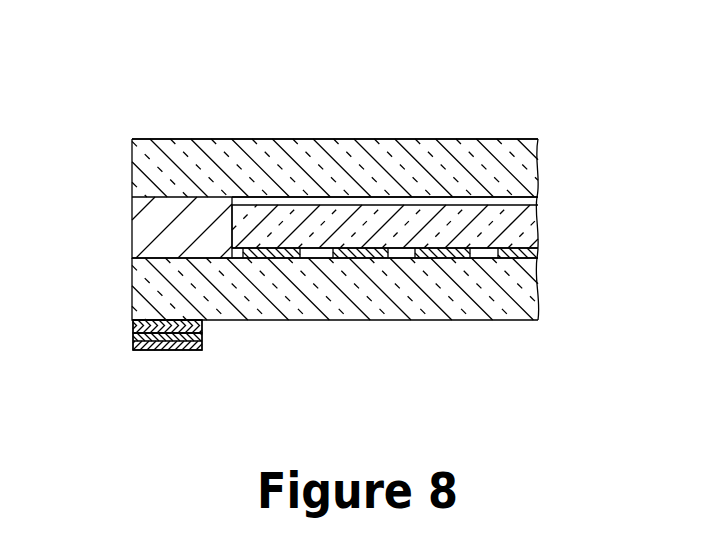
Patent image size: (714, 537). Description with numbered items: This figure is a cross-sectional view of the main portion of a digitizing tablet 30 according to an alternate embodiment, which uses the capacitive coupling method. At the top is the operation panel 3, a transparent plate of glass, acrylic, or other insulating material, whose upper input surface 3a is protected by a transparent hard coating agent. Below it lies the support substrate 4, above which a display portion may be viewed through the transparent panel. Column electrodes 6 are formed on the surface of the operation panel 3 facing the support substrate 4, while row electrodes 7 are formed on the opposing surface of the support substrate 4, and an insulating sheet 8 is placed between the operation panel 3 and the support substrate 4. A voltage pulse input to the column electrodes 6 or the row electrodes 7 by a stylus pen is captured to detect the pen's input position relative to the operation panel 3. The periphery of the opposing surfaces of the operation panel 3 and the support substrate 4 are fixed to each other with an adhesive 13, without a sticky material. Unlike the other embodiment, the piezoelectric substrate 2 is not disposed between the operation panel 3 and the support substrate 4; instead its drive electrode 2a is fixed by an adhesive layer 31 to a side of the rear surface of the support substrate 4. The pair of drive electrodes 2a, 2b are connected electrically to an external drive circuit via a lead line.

The digitizing tablet 30 is at (508, 86).
The operation panel 3 is at (365, 168).
The input surface 3a is at (284, 127).
The adhesive 13 is at (163, 224).
The column electrodes 6 is at (498, 198).
The insulating sheet 8 is at (525, 228).
The row electrodes 7 is at (443, 249).
The support substrate 4 is at (515, 290).
The piezoelectric substrate 2 is at (130, 338).
The drive electrode 2a is at (205, 325).
The drive electrode 2b is at (200, 352).
The adhesive layer 31 is at (130, 322).